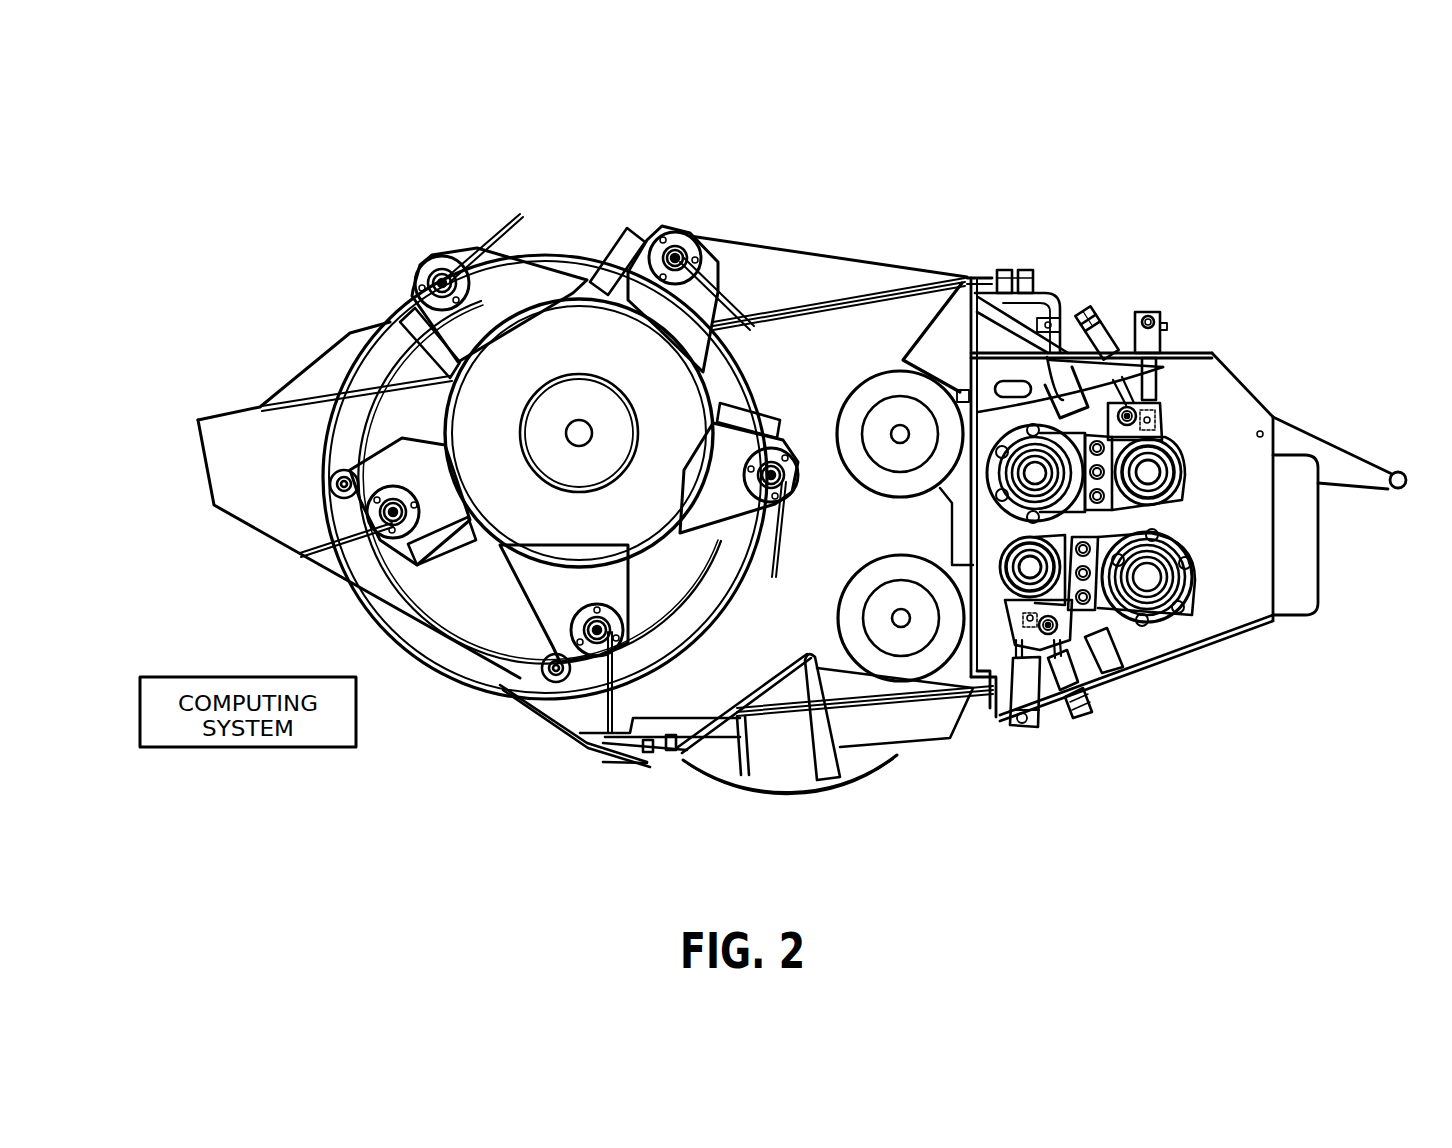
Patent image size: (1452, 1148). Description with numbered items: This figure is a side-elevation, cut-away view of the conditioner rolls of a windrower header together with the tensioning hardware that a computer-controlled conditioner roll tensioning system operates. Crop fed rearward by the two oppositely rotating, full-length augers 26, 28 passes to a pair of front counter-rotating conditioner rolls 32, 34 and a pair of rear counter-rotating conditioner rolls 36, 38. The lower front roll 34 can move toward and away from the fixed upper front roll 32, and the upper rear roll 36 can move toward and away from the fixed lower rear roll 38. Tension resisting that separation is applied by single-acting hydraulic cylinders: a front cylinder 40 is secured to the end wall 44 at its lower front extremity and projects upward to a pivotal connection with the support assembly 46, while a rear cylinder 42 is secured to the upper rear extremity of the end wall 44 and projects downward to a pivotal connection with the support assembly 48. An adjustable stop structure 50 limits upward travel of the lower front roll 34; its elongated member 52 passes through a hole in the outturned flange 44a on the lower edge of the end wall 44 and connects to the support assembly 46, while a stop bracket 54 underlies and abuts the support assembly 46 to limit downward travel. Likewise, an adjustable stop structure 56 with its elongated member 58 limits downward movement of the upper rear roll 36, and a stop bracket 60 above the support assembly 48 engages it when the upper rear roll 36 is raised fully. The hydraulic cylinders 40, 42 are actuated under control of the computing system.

The auger 26 is at (856, 413).
The auger 28 is at (848, 626).
The upper front conditioner roll 32 is at (1035, 473).
The lower front conditioner roll 34 is at (1028, 567).
The upper rear conditioner roll 36 is at (1148, 472).
The lower rear conditioner roll 38 is at (1147, 578).
The front hydraulic cylinder 40 is at (1020, 690).
The rear hydraulic cylinder 42 is at (1150, 387).
The end wall 44 is at (1267, 413).
The outturned flange 44a is at (1233, 640).
The support assembly 46 is at (1137, 541).
The support assembly 48 is at (1178, 489).
The adjustable stop structure 50 is at (1095, 730).
The elongated member 52 is at (1050, 697).
The stop bracket 54 is at (1107, 642).
The adjustable stop structure 56 is at (1080, 284).
The elongated member 58 is at (1133, 393).
The stop bracket 60 is at (962, 277).